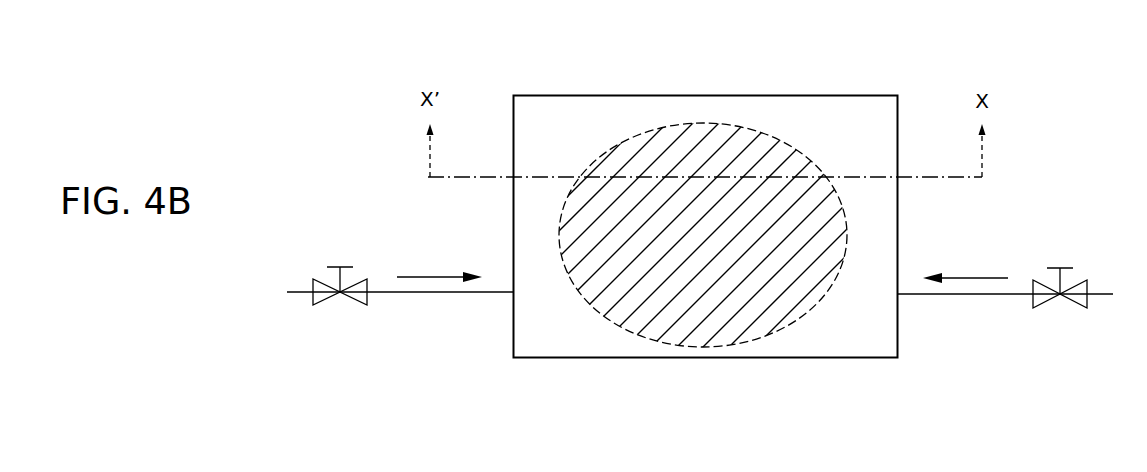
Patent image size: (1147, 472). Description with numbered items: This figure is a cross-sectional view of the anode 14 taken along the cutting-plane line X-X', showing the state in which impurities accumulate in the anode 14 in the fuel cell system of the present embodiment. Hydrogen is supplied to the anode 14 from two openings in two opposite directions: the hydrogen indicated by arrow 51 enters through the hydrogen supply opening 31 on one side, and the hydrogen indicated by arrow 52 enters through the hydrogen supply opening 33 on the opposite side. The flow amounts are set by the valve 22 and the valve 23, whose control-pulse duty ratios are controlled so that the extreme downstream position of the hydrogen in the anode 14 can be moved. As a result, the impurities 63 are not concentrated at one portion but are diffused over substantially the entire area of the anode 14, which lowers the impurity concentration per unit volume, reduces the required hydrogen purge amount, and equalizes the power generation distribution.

The anode 14 is at (707, 61).
The valve 22 is at (1060, 267).
The valve 23 is at (345, 268).
The hydrogen supply opening 31 is at (897, 294).
The hydrogen supply opening 33 is at (513, 296).
The hydrogen (arrow) 51 is at (970, 277).
The hydrogen (arrow) 52 is at (437, 277).
The impurities 63 is at (603, 316).